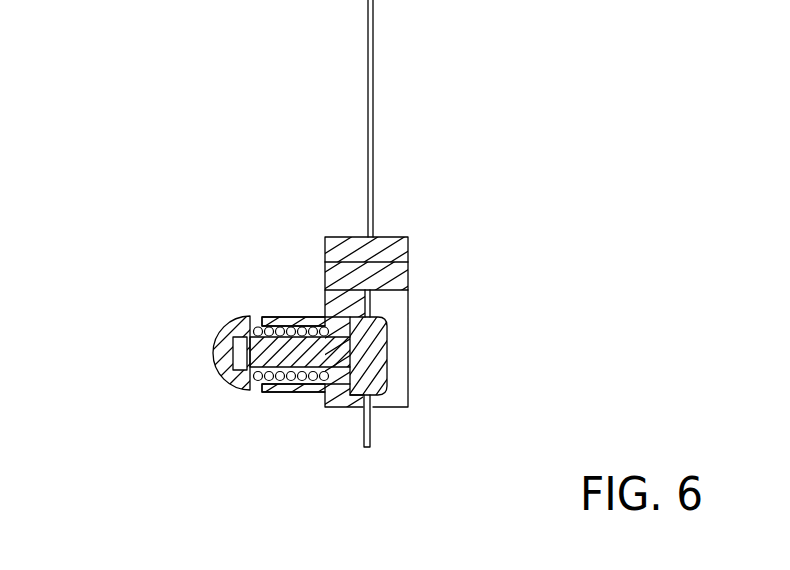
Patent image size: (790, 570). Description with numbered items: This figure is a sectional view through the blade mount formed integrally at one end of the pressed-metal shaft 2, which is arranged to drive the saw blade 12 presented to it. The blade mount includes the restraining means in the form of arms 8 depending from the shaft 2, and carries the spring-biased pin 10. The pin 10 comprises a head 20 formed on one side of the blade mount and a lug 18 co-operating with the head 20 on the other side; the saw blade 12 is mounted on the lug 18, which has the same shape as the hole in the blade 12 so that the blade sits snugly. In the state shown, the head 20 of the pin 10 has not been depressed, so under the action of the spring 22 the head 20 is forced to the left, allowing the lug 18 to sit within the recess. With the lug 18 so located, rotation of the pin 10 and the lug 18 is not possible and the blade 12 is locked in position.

The shaft 2 is at (405, 251).
The arms 8 is at (398, 385).
The pin 10 is at (269, 318).
The saw blade 12 is at (373, 53).
The lug 18 is at (378, 345).
The head 20 is at (226, 336).
The spring 22 is at (258, 388).